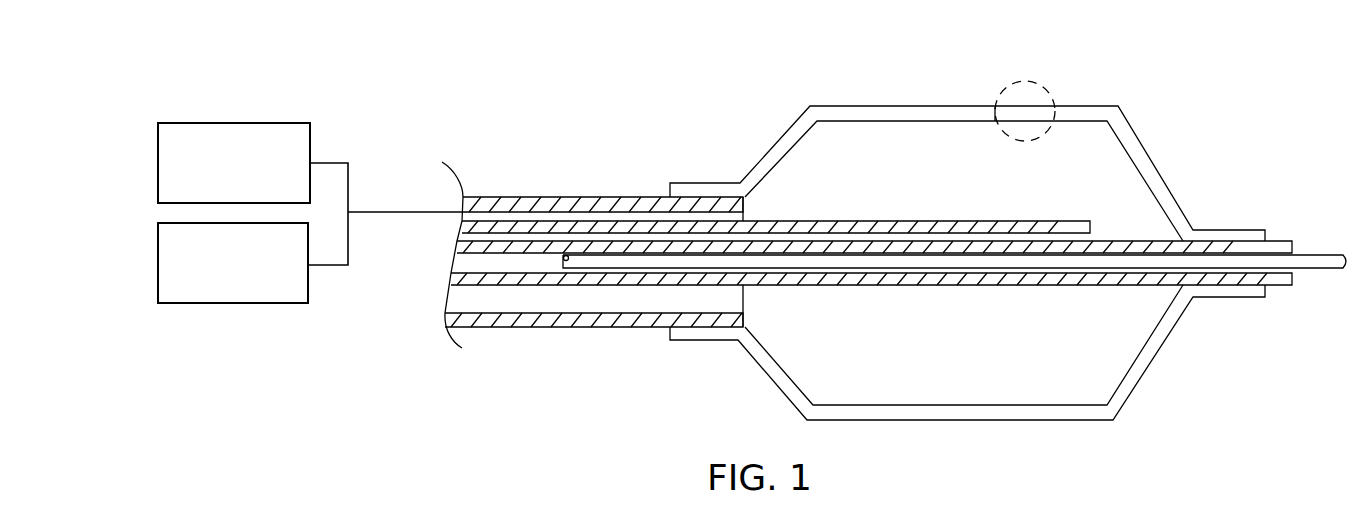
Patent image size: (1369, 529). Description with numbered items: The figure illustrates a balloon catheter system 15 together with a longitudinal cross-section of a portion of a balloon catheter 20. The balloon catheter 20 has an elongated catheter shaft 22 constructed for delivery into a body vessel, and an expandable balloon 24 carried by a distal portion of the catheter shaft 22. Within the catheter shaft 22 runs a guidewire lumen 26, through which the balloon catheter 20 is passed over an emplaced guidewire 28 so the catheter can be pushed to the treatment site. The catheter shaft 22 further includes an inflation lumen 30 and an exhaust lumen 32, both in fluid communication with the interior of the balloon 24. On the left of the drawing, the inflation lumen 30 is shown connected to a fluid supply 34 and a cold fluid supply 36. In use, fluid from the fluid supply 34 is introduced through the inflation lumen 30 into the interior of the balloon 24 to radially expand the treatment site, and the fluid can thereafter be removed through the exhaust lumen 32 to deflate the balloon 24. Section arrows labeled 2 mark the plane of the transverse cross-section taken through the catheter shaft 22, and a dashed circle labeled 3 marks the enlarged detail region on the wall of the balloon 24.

The balloon catheter system 15 is at (312, 362).
The cold fluid supply 36 is at (252, 122).
The fluid supply 34 is at (230, 305).
The catheter shaft 22 is at (463, 328).
The guidewire lumen 26 is at (458, 258).
The inflation lumen 30 is at (1042, 222).
The guidewire 28 is at (1323, 273).
The exhaust lumen 32 is at (748, 212).
The balloon catheter 20 is at (1176, 134).
The balloon 24 is at (1070, 413).
The detail region of FIG. 3 is at (1044, 85).
The section line of FIG. 2 is at (602, 190).